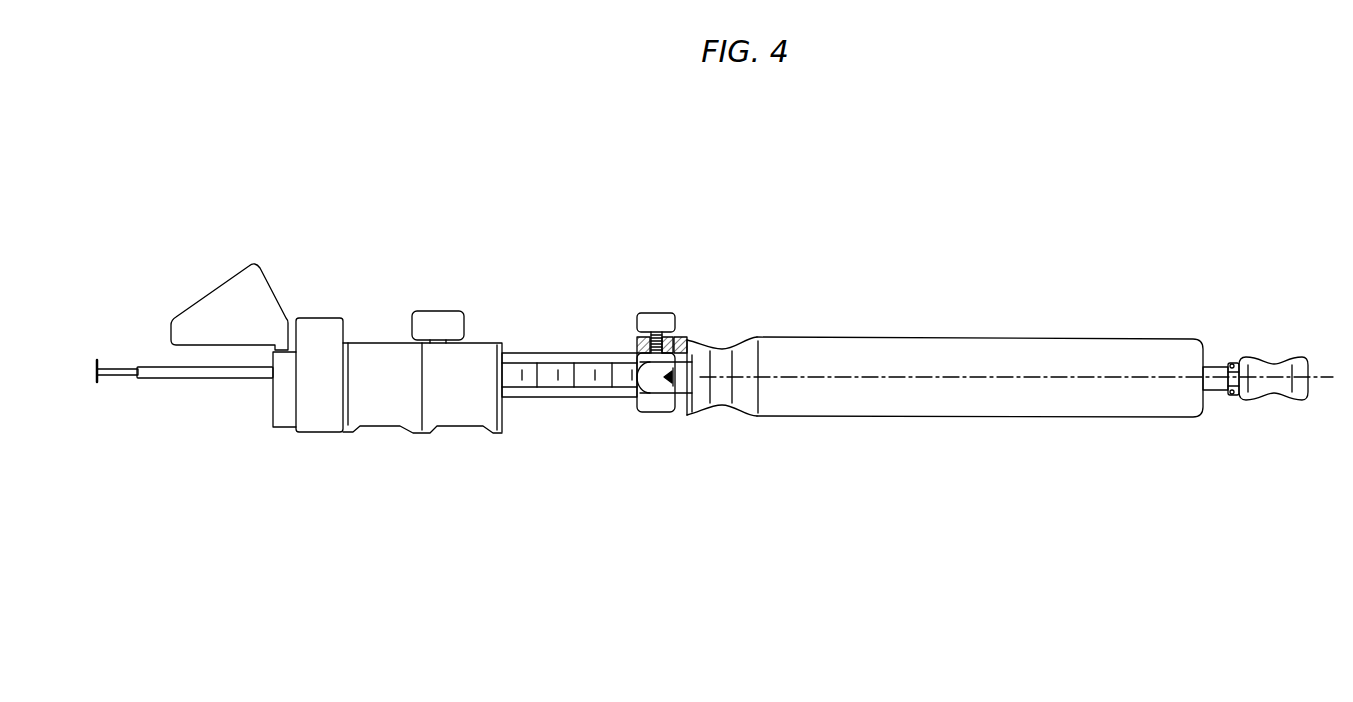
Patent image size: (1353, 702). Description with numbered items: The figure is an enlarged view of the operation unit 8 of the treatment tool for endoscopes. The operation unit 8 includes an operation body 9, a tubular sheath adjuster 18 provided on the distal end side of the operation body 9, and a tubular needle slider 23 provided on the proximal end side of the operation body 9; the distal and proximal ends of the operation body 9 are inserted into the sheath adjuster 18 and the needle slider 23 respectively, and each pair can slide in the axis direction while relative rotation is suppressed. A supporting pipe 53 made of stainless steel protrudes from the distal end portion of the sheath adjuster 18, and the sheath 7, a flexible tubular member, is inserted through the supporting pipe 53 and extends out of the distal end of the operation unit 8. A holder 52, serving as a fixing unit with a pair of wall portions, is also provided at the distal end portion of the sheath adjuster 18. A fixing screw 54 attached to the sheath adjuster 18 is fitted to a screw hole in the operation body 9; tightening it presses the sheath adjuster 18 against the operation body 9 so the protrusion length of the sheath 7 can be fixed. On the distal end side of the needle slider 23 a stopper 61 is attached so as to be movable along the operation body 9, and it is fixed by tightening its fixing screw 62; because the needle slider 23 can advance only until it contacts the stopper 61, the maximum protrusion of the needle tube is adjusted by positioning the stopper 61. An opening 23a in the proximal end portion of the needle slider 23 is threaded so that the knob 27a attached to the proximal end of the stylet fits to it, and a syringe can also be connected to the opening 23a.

The sheath 7 is at (115, 376).
The supporting pipe 53 is at (205, 378).
The holder 52 is at (225, 273).
The sheath adjuster 18 is at (417, 440).
The fixing screw 54 is at (438, 320).
The operation body 9 is at (587, 388).
The fixing screw 62 is at (653, 322).
The stopper 61 is at (661, 420).
The operation unit 8 is at (1010, 377).
The needle slider 23 is at (938, 423).
The opening 23a is at (1232, 400).
The knob 27a is at (1270, 365).